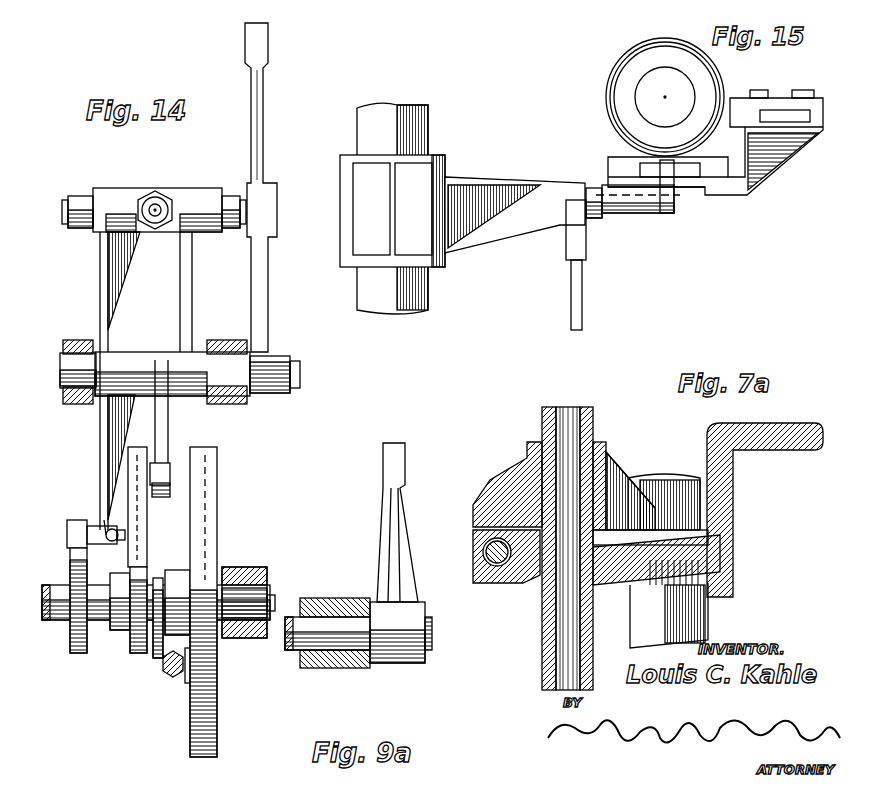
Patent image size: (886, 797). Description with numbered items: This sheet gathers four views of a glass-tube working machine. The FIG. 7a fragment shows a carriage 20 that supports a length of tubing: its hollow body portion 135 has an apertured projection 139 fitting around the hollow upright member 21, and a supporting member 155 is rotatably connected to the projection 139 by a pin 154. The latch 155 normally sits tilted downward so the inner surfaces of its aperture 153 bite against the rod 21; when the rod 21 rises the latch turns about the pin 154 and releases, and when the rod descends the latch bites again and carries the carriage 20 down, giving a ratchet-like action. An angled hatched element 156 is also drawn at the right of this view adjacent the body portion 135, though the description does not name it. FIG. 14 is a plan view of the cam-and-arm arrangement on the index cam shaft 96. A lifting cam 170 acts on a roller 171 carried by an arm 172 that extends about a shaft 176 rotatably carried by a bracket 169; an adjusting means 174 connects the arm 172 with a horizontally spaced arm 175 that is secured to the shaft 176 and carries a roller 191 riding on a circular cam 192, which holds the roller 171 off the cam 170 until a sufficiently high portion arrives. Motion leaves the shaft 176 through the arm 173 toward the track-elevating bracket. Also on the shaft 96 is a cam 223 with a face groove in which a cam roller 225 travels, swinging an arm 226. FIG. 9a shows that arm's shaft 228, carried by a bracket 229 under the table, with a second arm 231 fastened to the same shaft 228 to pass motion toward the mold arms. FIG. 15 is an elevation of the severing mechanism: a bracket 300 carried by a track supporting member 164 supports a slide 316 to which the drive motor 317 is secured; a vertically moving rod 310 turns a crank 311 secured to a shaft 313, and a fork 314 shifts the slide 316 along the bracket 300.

In FIG. 14, the arm 173 is at (268, 296).
In FIG. 14, the adjusting means 174 is at (152, 193).
In FIG. 14, the arm 175 is at (98, 264).
In FIG. 14, the arm 172 is at (192, 278).
In FIG. 14, the shaft 176 is at (60, 358).
In FIG. 14, the bracket 169 is at (230, 405).
In FIG. 14, the roller 171 is at (160, 495).
In FIG. 14, the roller 191 is at (78, 520).
In FIG. 14, the index cam shaft 96 is at (52, 622).
In FIG. 14, the circular cam 192 is at (78, 655).
In FIG. 14, the cam 170 is at (138, 655).
In FIG. 14, the arm 226 is at (170, 680).
In FIG. 14, the cam roller 225 is at (187, 685).
In FIG. 14, the cam 223 is at (192, 742).
In FIG. 15, the track supporting member 164 is at (390, 108).
In FIG. 15, the bracket 300 is at (498, 180).
In FIG. 15, the rod 310 is at (583, 294).
In FIG. 15, the crank 311 is at (594, 222).
In FIG. 15, the shaft 313 is at (642, 214).
In FIG. 15, the drive motor 317 is at (608, 80).
In FIG. 15, the slide 316 is at (625, 160).
In FIG. 15, the fork 314 is at (678, 200).
In FIG. 9A, the arm 231 is at (388, 519).
In FIG. 9A, the shaft 228 is at (325, 622).
In FIG. 9A, the bracket 229 is at (342, 670).
In FIG. 7A, the carriage 20 is at (507, 536).
In FIG. 7A, the pin 154 is at (497, 566).
In FIG. 7A, the upright member 21 is at (593, 415).
In FIG. 7A, the apertured projection 139 is at (606, 452).
In FIG. 7A, the hollow body portion 135 is at (705, 625).
In FIG. 7A, the supporting member 155 is at (690, 560).
In FIG. 7A, the aperture 153 is at (597, 587).
In FIG. 7A, the bracket 156 is at (808, 423).